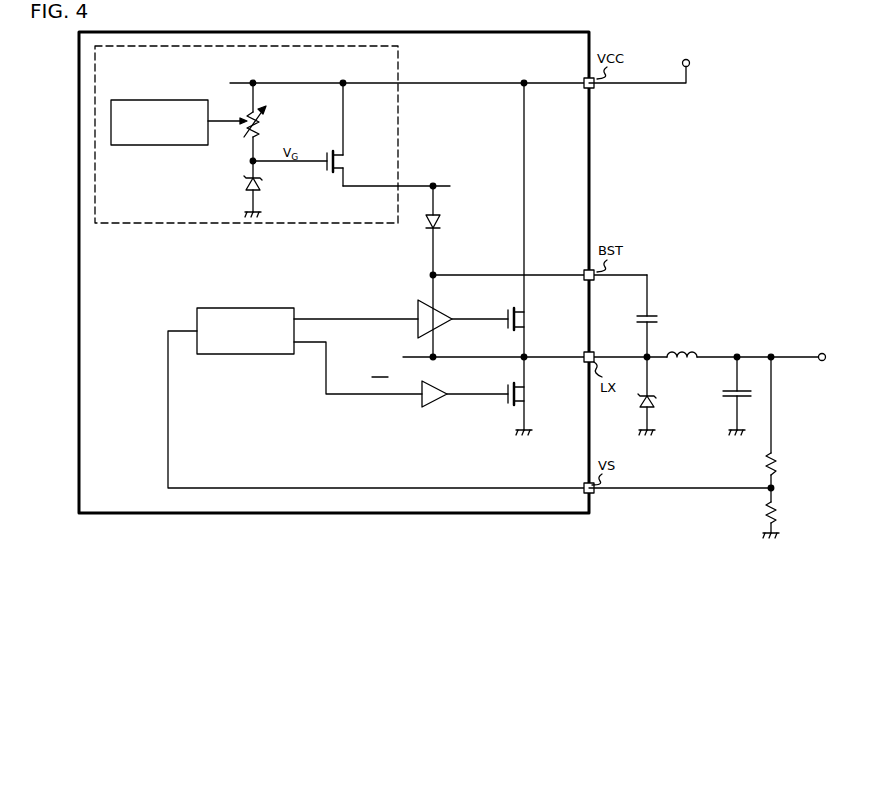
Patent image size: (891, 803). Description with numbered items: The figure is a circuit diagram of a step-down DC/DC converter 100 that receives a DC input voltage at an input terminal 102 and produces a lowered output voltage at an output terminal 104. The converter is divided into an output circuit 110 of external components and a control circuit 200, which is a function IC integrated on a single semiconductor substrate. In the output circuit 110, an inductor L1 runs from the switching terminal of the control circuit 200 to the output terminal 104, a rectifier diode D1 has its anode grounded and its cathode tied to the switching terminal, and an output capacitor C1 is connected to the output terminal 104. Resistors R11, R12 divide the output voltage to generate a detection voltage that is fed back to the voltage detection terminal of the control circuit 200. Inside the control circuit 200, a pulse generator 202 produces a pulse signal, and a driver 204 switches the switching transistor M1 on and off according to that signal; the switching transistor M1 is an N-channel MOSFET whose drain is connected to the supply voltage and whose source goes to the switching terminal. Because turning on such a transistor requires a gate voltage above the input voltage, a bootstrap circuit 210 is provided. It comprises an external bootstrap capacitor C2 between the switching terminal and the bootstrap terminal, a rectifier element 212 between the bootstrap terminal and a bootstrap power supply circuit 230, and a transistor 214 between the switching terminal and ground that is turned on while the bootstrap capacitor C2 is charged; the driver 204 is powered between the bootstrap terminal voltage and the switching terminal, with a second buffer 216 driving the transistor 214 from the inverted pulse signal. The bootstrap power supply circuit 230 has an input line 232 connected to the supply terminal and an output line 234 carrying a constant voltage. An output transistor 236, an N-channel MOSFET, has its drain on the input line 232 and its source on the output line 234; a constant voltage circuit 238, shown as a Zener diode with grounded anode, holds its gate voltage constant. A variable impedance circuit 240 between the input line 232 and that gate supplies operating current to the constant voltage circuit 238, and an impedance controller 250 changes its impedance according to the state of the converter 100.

The DC/DC converter 100 is at (882, 47).
The input terminal 102 is at (692, 64).
The output terminal 104 is at (826, 352).
The output circuit 110 is at (666, 424).
The control circuit 200 is at (265, 515).
The pulse generator 202 is at (246, 357).
The driver 204 is at (441, 311).
The bootstrap circuit 210 is at (458, 238).
The rectifier element 212 is at (445, 220).
The transistor 214 is at (530, 389).
The low-side driver buffer 216 is at (438, 408).
The bootstrap power supply circuit 230 is at (288, 224).
The input line 232 is at (319, 81).
The output line 234 is at (372, 189).
The output transistor 236 is at (349, 155).
The constant voltage circuit 238 is at (262, 187).
The variable impedance circuit 240 is at (262, 126).
The impedance controller 250 is at (160, 148).
The switching transistor M1 is at (530, 314).
The bootstrap capacitor C2 is at (660, 318).
The inductor L1 is at (682, 349).
The rectifier diode D1 is at (656, 400).
The output capacitor C1 is at (724, 393).
The resistor R11 is at (780, 465).
The resistor R12 is at (791, 513).